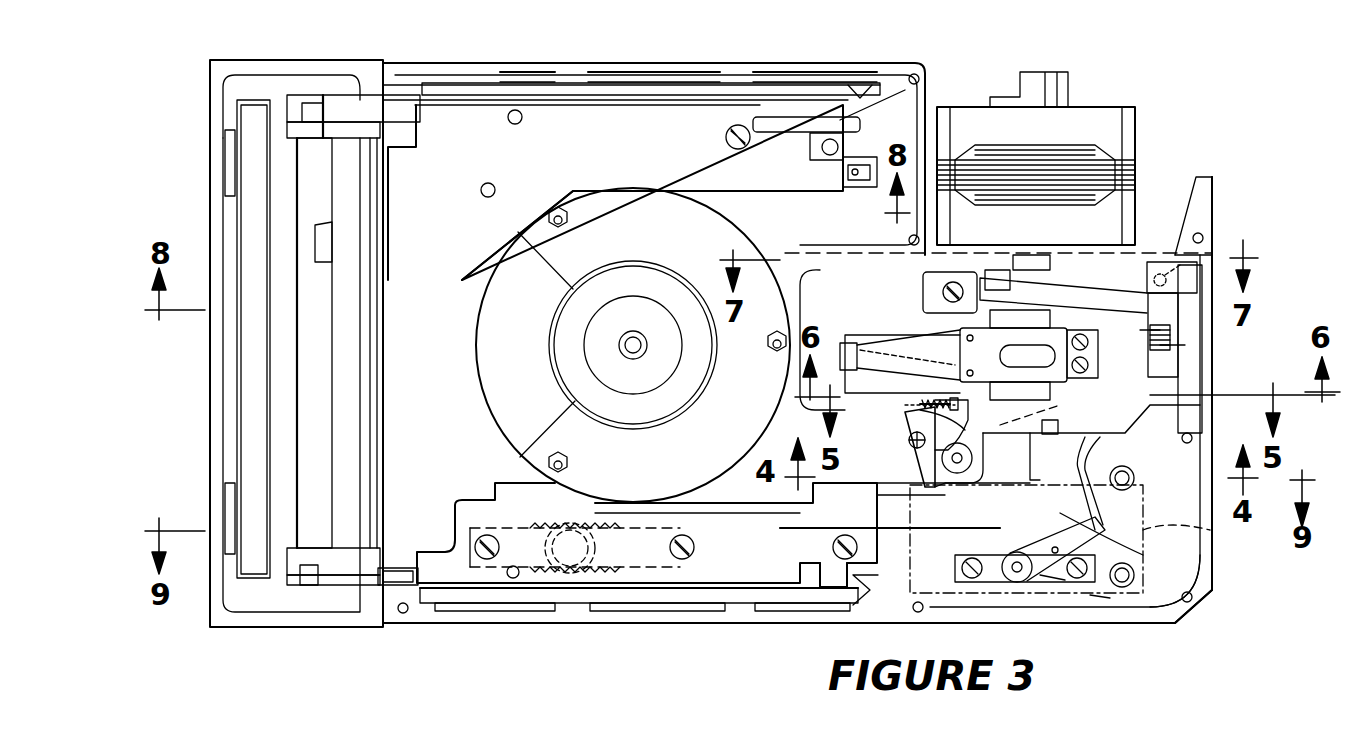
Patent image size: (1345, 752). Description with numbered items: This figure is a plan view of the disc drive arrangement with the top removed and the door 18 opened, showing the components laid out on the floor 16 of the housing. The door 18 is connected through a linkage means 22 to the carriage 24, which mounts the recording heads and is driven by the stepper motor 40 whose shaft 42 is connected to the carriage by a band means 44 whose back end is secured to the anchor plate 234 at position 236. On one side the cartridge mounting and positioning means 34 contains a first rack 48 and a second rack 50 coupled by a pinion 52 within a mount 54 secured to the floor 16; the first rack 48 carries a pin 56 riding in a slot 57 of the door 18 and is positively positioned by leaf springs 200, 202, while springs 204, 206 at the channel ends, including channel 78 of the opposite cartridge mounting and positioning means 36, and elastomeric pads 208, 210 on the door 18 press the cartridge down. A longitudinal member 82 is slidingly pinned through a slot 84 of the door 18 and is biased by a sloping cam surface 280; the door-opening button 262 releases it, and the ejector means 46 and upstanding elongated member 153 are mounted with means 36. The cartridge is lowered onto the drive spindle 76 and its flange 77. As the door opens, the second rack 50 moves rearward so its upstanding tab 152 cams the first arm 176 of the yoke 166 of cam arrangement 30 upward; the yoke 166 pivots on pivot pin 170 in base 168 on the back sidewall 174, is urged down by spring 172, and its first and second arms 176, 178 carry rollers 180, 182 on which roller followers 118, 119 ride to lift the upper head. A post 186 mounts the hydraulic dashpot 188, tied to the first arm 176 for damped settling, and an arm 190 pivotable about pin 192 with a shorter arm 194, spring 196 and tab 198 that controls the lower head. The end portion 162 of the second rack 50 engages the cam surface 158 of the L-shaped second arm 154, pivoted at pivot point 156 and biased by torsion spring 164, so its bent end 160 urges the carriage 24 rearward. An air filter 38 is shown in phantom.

The floor 16 is at (452, 395).
The door 18 is at (220, 405).
The linkage means 22 is at (528, 628).
The carriage 24 is at (890, 305).
The cam arrangement 30 is at (1282, 432).
The cartridge mounting and positioning means 34 is at (458, 478).
The cartridge mounting and positioning means 36 is at (460, 293).
The air filter 38 is at (1198, 540).
The stepper motor 40 is at (1068, 115).
The shaft 42 is at (1050, 262).
The band means 44 is at (1160, 268).
The ejector means 46 is at (880, 158).
The first rack 48 is at (610, 567).
The second rack 50 is at (612, 535).
The pinion 52 is at (575, 560).
The mount 54 is at (540, 513).
The pin 56 is at (312, 575).
The slot 57 is at (290, 590).
The drive spindle 76 is at (640, 346).
The spindle flange 77 is at (710, 351).
The channel 78 is at (615, 95).
The longitudinal member 82 is at (355, 110).
The slot 84 is at (312, 108).
The roller follower 118 is at (1052, 390).
The roller follower 119 is at (1052, 318).
The upstanding tab 152 is at (1062, 418).
The elongated member 153 is at (812, 128).
The second arm 154 is at (1095, 605).
The pivot point 156 is at (1017, 572).
The cam surface 158 is at (1040, 540).
The bent end 160 is at (1100, 450).
The end portion 162 is at (1140, 540).
The torsion spring 164 is at (1055, 585).
The yoke 166 is at (1150, 323).
The base 168 is at (1190, 368).
The pivot pin 170 is at (1157, 519).
The spring 172 is at (1180, 343).
The back sidewall 174 is at (1210, 575).
The first arm 176 is at (878, 510).
The second arm 178 is at (998, 280).
The first roller 180 is at (1005, 433).
The second roller 182 is at (945, 308).
The post 186 is at (880, 487).
The hydraulic dashpot 188 is at (973, 465).
The arm 190 is at (905, 380).
The pin 192 is at (952, 380).
The second shorter arm 194 is at (1029, 355).
The spring 196 is at (910, 452).
The tab 198 is at (955, 412).
The leaf spring 200 is at (400, 585).
The leaf spring 202 is at (690, 590).
The spring 204 is at (870, 612).
The spring 206 is at (858, 80).
The elastomeric pad 208 is at (228, 492).
The elastomeric pad 210 is at (237, 160).
The anchor plate 234 is at (1200, 210).
The position 236 is at (1205, 240).
The door-opening button 262 is at (318, 238).
The cam surface 280 is at (660, 165).